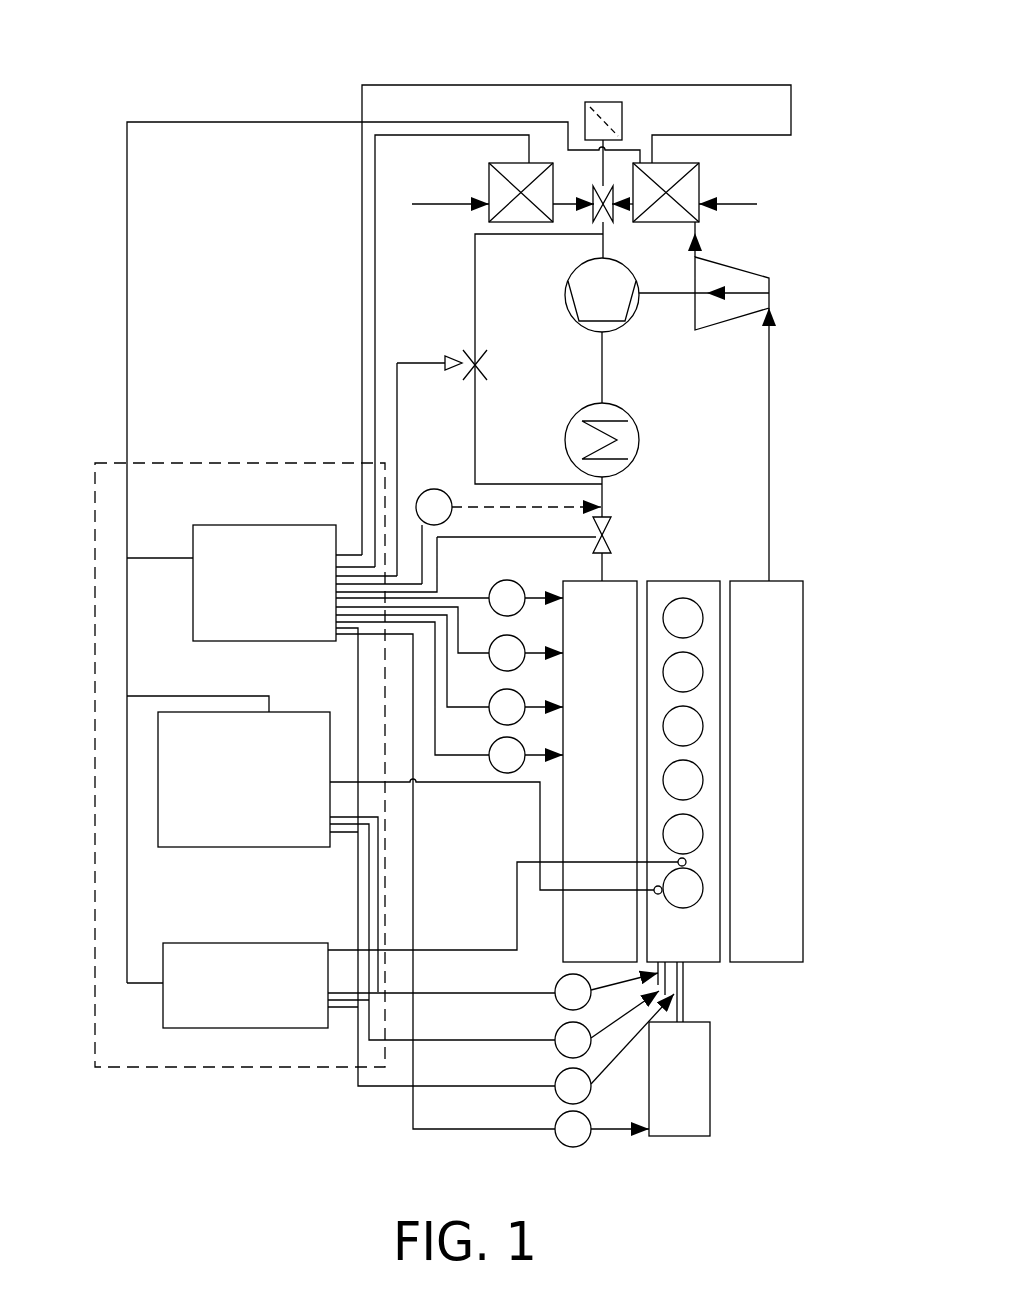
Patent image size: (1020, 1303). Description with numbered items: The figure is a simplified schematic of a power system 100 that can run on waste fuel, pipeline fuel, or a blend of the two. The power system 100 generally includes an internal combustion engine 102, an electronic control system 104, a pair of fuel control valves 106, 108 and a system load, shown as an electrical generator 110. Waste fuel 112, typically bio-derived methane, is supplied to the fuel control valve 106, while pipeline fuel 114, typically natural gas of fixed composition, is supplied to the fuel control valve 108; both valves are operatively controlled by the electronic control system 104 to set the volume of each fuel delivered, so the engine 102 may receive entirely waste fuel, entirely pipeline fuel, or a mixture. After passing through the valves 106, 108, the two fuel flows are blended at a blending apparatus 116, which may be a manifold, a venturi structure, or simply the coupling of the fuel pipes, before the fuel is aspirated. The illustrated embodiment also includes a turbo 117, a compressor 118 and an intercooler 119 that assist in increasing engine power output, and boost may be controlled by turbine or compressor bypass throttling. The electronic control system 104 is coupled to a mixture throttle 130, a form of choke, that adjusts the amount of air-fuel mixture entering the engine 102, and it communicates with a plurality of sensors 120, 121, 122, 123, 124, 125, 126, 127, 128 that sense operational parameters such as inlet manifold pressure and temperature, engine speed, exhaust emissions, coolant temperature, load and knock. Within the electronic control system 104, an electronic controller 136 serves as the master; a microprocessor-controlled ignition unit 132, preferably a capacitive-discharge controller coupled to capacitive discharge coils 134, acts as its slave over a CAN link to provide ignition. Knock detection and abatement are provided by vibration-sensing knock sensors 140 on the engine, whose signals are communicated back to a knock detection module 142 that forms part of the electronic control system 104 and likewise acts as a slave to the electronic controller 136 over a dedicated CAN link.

The power system 100 is at (818, 73).
The internal combustion engine 102 is at (832, 553).
The electronic control system 104 is at (192, 462).
The fuel control valve 106 is at (699, 175).
The fuel control valve 108 is at (507, 163).
The electrical generator 110 is at (710, 1085).
The waste fuel 112 is at (737, 204).
The pipeline fuel 114 is at (445, 205).
The blending apparatus 116 is at (595, 196).
The turbo 117 is at (770, 293).
The compressor 118 is at (568, 317).
The intercooler 119 is at (627, 417).
The sensor 120 is at (497, 582).
The sensor 121 is at (502, 639).
The sensor 122 is at (500, 692).
The sensor 123 is at (492, 740).
The sensor 124 is at (560, 1005).
The sensor 125 is at (560, 1050).
The sensor 126 is at (560, 1096).
The sensor 127 is at (573, 1147).
The sensor 128 is at (437, 490).
The mixture throttle 130 is at (605, 535).
The microprocessor-controlled ignition unit 132 is at (158, 783).
The capacitive discharge coils 134 is at (660, 895).
The electronic controller 136 is at (218, 525).
The knock sensor 140 is at (686, 862).
The knock detection module 142 is at (195, 1028).